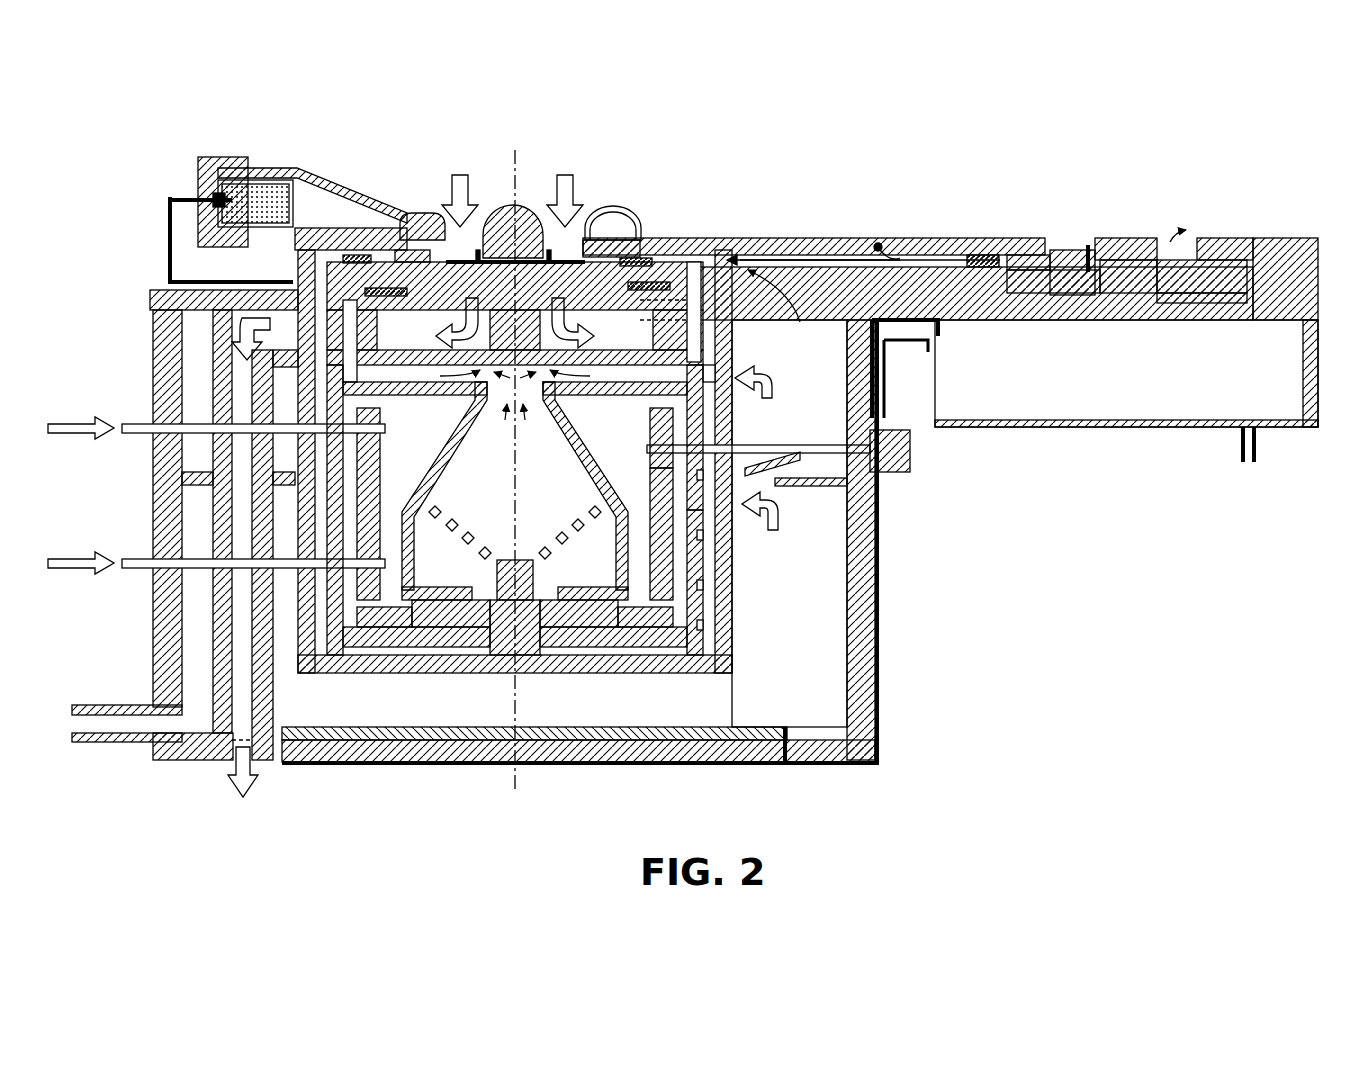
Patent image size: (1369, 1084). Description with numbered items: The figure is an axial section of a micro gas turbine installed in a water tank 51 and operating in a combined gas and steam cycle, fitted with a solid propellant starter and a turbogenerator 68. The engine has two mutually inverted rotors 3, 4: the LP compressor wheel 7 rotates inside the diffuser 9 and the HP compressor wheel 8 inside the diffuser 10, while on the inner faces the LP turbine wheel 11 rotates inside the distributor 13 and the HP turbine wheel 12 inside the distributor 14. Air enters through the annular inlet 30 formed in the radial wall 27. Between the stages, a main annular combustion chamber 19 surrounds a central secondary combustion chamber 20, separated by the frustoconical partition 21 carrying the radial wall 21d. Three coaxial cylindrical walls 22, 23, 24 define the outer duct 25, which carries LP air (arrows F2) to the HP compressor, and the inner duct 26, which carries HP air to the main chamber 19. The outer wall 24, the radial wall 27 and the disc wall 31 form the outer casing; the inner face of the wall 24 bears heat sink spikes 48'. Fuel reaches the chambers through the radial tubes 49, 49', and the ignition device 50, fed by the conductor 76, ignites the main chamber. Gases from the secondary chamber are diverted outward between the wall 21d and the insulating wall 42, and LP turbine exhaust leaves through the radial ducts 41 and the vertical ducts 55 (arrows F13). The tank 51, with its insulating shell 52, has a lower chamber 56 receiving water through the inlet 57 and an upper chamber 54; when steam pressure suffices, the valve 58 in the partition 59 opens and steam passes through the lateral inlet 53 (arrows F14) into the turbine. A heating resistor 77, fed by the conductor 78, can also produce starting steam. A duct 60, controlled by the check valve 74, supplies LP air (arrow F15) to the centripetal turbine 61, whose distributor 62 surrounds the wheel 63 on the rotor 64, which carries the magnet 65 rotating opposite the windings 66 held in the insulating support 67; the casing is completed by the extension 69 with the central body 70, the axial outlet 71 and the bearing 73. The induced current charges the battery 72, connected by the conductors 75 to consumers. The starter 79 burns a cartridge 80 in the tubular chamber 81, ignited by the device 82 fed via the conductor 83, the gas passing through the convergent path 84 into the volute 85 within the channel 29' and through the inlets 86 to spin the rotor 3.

The rotor 3 is at (470, 236).
The rotor 4 is at (555, 656).
The LP centrifugal compressor wheel 7 is at (585, 236).
The HP centrifugal compressor wheel 8 is at (424, 640).
The annular centrifugal diffuser 9 is at (700, 266).
The annular centrifugal diffuser 10 is at (396, 646).
The LP centripetal turbine wheel 11 is at (650, 266).
The HP centripetal turbine wheel 12 is at (452, 598).
The centripetal annular distributor 13 is at (380, 380).
The centripetal annular distributor 14 is at (606, 598).
The main annular combustion chamber 19 is at (431, 462).
The secondary combustion chamber 20 is at (568, 512).
The central partition 21 is at (447, 482).
The annular radial wall 21d is at (570, 396).
The inner cylindrical wall 22 is at (650, 458).
The intermediate cylindrical wall 23 is at (670, 494).
The outer cylindrical wall 24 is at (720, 548).
The outer annular duct 25 is at (705, 440).
The inner annular duct 26 is at (357, 498).
The annular radial wall 27 is at (624, 256).
The channel 29' is at (615, 186).
The axial annular inlet 30 is at (520, 236).
The radial wall 31 is at (605, 674).
The exhaust ducts 41 is at (425, 345).
The inner radial wall 42 is at (425, 396).
The heat sink spikes 48' is at (753, 550).
The fuel supply tube 49 is at (216, 451).
The fuel supply tube 49' is at (216, 588).
The ignition device 50 is at (906, 432).
The water tank 51 is at (806, 716).
The outer shell 52 is at (862, 652).
The lateral inlet 53 is at (740, 366).
The upper annular chamber 54 is at (821, 420).
The exhaust ducts 55 is at (240, 666).
The lower annular chamber 56 is at (801, 643).
The lower lateral water inlet 57 is at (110, 736).
The valve 58 is at (800, 470).
The transverse separating partition 59 is at (815, 484).
The duct 60 is at (770, 262).
The centripetal turbine 61 is at (1050, 248).
The distributor 62 is at (980, 262).
The centripetal turbine wheel 63 is at (1212, 262).
The rotor 64 is at (1162, 260).
The permanent magnet 65 is at (1220, 295).
The flat armature windings 66 is at (1075, 298).
The support 67 is at (1300, 306).
The turbogenerator 68 is at (1283, 222).
The extension 69 is at (1057, 232).
The cylindrical central body 70 is at (1130, 240).
The axial outlet 71 is at (1186, 240).
The electrical energy storage battery 72 is at (1146, 400).
The aerodynamic bearing 73 is at (1089, 250).
The micro check valve 74 is at (890, 262).
The conductors 75 is at (1256, 456).
The conductor 76 is at (906, 365).
The heating resistor 77 is at (623, 741).
The electrical conductor 78 is at (876, 728).
The starter 79 is at (188, 163).
The cartridge 80 is at (290, 190).
The tubular combustion chamber 81 is at (260, 180).
The ignition device 82 is at (214, 198).
The electrical conductor 83 is at (170, 258).
The convergent path 84 is at (340, 196).
The volute 85 is at (616, 222).
The inlets 86 is at (412, 226).
The arrows F2 is at (781, 311).
The arrows F13 is at (246, 790).
The arrows F14 is at (778, 392).
The arrows F15 is at (750, 242).